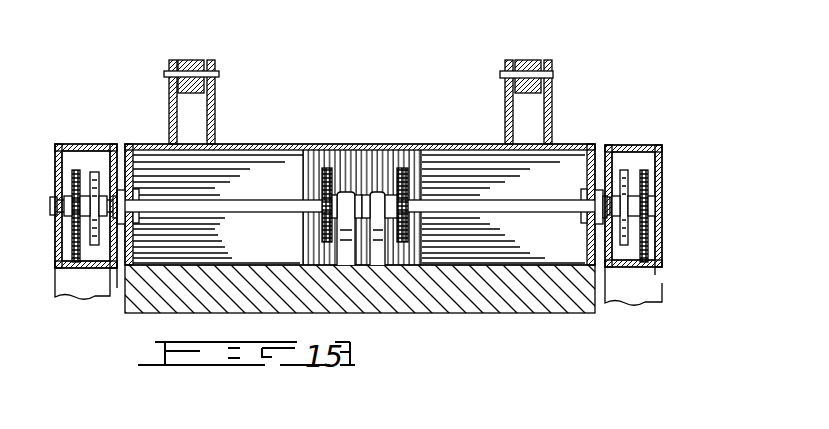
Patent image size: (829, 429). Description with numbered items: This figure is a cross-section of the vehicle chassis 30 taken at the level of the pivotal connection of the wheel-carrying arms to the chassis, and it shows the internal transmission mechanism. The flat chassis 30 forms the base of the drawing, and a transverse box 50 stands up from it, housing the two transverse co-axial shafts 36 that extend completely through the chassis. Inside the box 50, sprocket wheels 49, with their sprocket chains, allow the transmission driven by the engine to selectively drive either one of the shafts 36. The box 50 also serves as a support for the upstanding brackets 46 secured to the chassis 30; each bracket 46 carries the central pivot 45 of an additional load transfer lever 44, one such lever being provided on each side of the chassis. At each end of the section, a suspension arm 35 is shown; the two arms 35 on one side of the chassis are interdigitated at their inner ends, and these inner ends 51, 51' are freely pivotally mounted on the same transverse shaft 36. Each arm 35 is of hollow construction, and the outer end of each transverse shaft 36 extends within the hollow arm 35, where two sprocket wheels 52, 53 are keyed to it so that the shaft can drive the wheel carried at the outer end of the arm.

The chassis 30 is at (558, 290).
The suspension arm 35 is at (644, 268).
The transverse shaft 36 is at (243, 204).
The additional load transfer lever 44 is at (529, 60).
The pivot 45 is at (553, 75).
The upstanding bracket 46 is at (513, 130).
The sprocket wheels 49 is at (326, 168).
The transverse box 50 is at (414, 190).
The inner end of arm 51 is at (659, 201).
The inner end of arm 51' is at (652, 124).
The sprocket wheel 52 is at (622, 239).
The sprocket wheel 53 is at (640, 192).